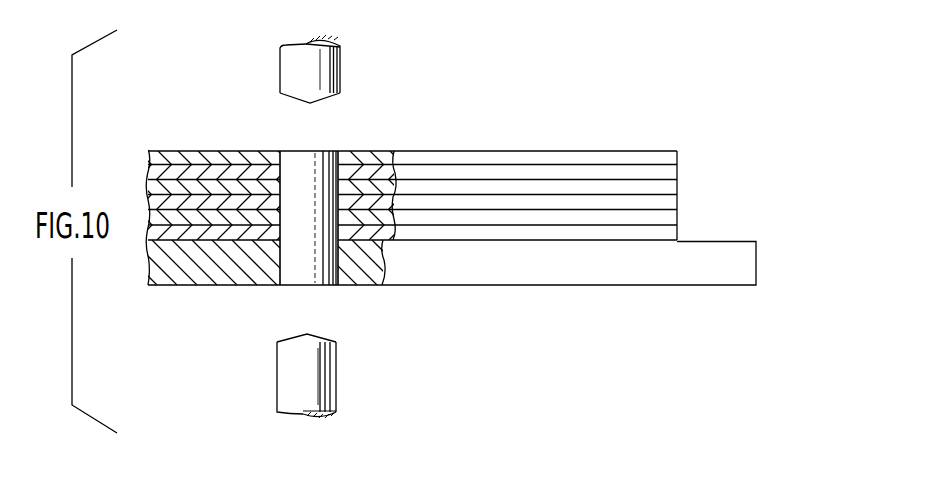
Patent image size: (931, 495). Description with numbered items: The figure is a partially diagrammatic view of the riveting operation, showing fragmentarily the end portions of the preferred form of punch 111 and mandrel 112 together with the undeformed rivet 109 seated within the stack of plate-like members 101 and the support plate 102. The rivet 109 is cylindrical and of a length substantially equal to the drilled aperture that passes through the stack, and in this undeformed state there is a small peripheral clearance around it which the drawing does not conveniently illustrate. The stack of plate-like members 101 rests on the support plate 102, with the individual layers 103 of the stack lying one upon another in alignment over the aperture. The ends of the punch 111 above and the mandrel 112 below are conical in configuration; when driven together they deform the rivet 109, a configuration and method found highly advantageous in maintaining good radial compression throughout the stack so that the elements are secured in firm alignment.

The laminated body 101 is at (508, 151).
The base layer 102 is at (758, 263).
The layers 103 is at (684, 186).
The rivet 109 is at (317, 148).
The punch 111 is at (340, 68).
The mandrel 112 is at (338, 385).